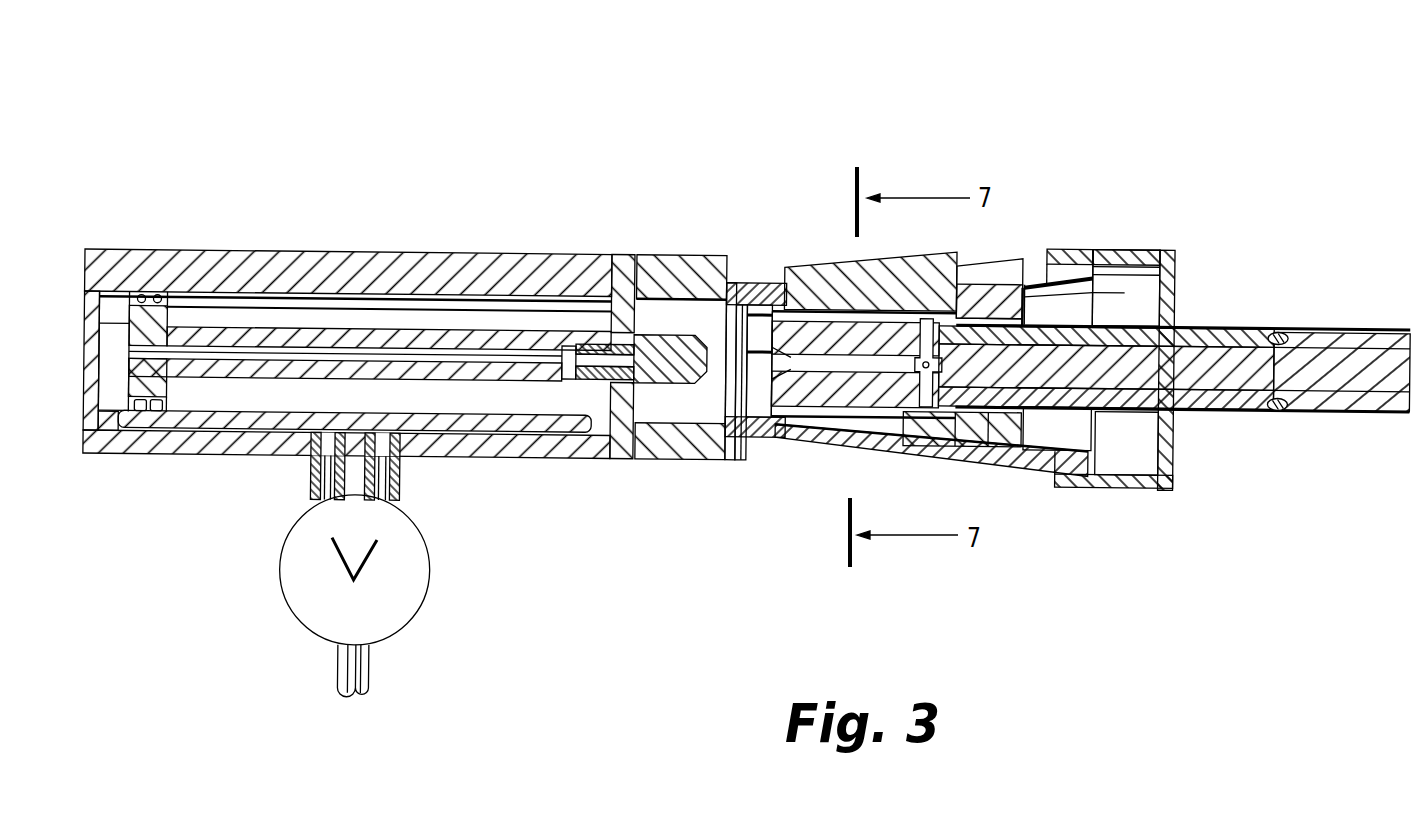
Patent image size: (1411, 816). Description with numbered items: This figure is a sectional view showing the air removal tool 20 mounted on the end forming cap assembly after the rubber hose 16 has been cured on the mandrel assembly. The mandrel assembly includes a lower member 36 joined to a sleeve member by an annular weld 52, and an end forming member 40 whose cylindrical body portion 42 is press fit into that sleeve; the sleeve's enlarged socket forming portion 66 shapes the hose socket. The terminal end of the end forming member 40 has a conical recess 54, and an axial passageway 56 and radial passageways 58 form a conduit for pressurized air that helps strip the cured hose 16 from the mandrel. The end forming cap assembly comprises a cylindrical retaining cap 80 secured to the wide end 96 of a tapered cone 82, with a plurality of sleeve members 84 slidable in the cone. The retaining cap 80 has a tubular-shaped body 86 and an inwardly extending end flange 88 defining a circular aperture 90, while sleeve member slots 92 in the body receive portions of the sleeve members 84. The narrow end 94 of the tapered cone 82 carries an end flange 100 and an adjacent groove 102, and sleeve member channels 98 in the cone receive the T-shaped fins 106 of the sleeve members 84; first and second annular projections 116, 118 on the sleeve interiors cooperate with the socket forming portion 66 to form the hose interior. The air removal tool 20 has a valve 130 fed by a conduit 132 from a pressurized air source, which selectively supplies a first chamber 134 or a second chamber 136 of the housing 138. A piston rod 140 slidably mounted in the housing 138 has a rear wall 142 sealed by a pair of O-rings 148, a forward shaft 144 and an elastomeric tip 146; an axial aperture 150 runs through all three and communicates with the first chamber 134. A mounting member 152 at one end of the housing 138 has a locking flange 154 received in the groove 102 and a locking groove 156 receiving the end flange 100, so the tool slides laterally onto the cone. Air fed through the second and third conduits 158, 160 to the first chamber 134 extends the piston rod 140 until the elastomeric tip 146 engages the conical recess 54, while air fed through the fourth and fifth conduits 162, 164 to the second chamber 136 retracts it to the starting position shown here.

The hose 16 is at (1243, 316).
The air removal tool 20 is at (499, 150).
The lower member 36 is at (1378, 398).
The end forming member 40 is at (857, 400).
The cylindrical body portion 42 is at (1238, 378).
The annular weld 52 is at (1273, 338).
The conical recess 54 is at (760, 293).
The axial passageway 56 is at (855, 300).
The radial passageways 58 is at (957, 283).
The socket forming portion 66 is at (980, 293).
The retaining cap 80 is at (1166, 242).
The tapered cone 82 is at (902, 468).
The sleeve members 84 is at (903, 248).
The tubular-shaped body 86 is at (1123, 490).
The end flange 88 is at (1178, 470).
The circular aperture 90 is at (1180, 430).
The sleeve member slots 92 is at (1072, 255).
The narrow end 94 is at (817, 445).
The wide end 96 is at (1043, 473).
The sleeve member channels 98 is at (1023, 273).
The end flange 100 is at (740, 470).
The groove 102 is at (745, 440).
The T-shaped fins 106 is at (803, 262).
The first annular projection 116 is at (932, 450).
The second annular projection 118 is at (1023, 285).
The valve 130 is at (405, 628).
The conduit 132 is at (342, 660).
The first chamber 134 is at (118, 298).
The second chamber 136 is at (527, 300).
The air removal tool housing 138 is at (467, 255).
The piston rod 140 is at (374, 312).
The rear wall 142 is at (247, 297).
The shaft 144 is at (262, 372).
The elastomeric tip 146 is at (658, 382).
The O-rings 148 is at (170, 303).
The axial aperture 150 is at (450, 362).
The mounting member 152 is at (665, 458).
The locking flange 154 is at (745, 295).
The locking groove 156 is at (730, 262).
The second conduit 158 is at (313, 475).
The third conduit 160 is at (217, 445).
The fourth conduit 162 is at (405, 487).
The fifth conduit 164 is at (530, 432).